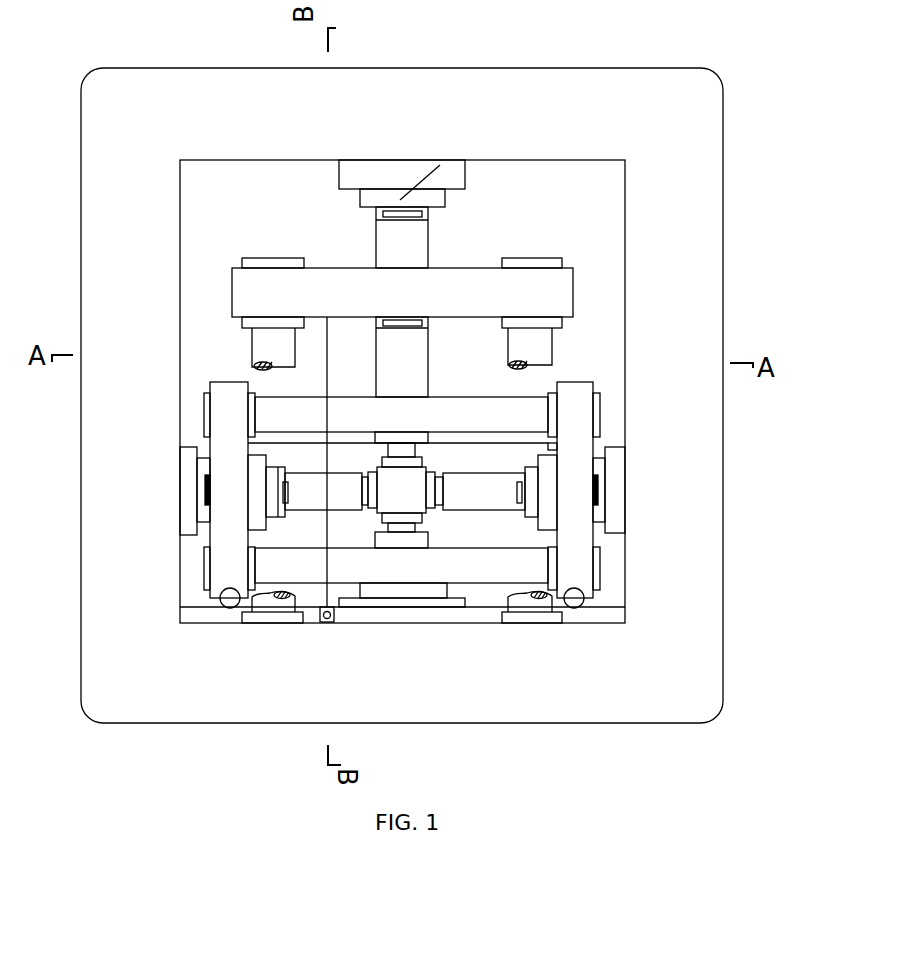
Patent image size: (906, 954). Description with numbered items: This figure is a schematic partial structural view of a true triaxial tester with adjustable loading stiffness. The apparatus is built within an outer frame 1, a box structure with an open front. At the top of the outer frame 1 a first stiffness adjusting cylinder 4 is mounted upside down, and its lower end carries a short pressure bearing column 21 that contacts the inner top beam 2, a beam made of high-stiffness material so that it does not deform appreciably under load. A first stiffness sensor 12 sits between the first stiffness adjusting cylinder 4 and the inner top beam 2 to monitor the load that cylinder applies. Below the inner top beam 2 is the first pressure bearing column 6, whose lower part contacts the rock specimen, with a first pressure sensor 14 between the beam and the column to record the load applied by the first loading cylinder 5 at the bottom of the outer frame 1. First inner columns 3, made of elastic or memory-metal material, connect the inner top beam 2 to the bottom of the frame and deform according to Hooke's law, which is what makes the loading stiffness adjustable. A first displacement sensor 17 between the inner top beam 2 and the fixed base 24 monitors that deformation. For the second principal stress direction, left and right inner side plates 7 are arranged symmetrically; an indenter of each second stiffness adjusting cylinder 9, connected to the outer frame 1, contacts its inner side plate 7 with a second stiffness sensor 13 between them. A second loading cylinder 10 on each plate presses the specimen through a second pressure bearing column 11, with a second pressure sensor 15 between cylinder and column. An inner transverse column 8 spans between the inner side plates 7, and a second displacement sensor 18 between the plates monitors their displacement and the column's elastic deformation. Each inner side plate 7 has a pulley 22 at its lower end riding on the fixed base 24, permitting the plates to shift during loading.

The outer frame 1 is at (703, 132).
The inner top beam 2 is at (565, 280).
The first inner column 3 is at (552, 357).
The first stiffness adjusting cylinder 4 is at (415, 178).
The first loading cylinder 5 is at (403, 595).
The first pressure bearing column 6 is at (376, 353).
The inner side plate 7 is at (583, 408).
The inner transverse column 8 is at (515, 418).
The second stiffness adjusting cylinder 9 is at (182, 492).
The second loading cylinder 10 is at (545, 508).
The second pressure bearing column 11 is at (460, 510).
The first stiffness sensor 12 is at (428, 217).
The second stiffness sensor 13 is at (208, 505).
The first pressure sensor 14 is at (390, 320).
The second pressure sensor 15 is at (282, 500).
The first displacement sensor 17 is at (330, 622).
The second displacement sensor 18 is at (553, 452).
The short pressure bearing column 21 is at (415, 197).
The pulley 22 is at (575, 598).
The fixed base 24 is at (452, 615).